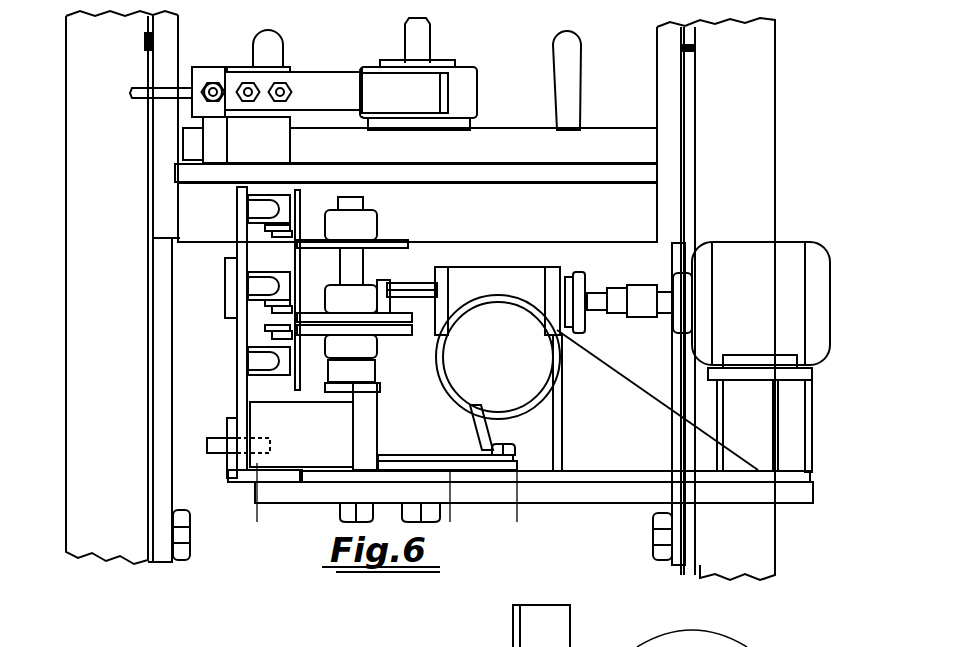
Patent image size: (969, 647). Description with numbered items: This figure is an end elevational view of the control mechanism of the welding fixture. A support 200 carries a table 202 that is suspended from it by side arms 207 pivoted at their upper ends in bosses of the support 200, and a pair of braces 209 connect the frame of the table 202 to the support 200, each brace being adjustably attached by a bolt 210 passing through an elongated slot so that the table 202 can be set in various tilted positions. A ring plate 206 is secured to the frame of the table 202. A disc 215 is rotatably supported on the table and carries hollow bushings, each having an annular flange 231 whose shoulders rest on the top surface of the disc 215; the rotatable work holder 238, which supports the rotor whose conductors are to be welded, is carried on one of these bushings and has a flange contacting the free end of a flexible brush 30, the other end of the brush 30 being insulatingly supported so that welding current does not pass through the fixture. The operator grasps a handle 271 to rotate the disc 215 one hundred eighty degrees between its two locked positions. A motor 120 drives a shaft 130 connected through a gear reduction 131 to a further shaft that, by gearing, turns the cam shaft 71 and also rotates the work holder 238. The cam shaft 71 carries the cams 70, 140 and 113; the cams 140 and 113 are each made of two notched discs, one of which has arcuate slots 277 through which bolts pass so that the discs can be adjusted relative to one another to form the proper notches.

The flexible brush 30 is at (386, 85).
The cam 70 is at (404, 332).
The cam shaft 71 is at (337, 268).
The cam 113 is at (398, 240).
The motor 120 is at (737, 252).
The shaft 130 is at (596, 298).
The gear reduction 131 is at (493, 280).
The cam 140 is at (388, 283).
The support 200 is at (762, 100).
The table 202 is at (628, 232).
The ring plate 206 is at (576, 175).
The side arm 207 is at (673, 138).
The brace 209 is at (168, 398).
The bolt 210 is at (188, 538).
The disc 215 is at (620, 133).
The annular flange 231 is at (433, 124).
The work holder 238 is at (470, 97).
The handle 271 is at (566, 47).
The arcuate slot 277 is at (673, 638).